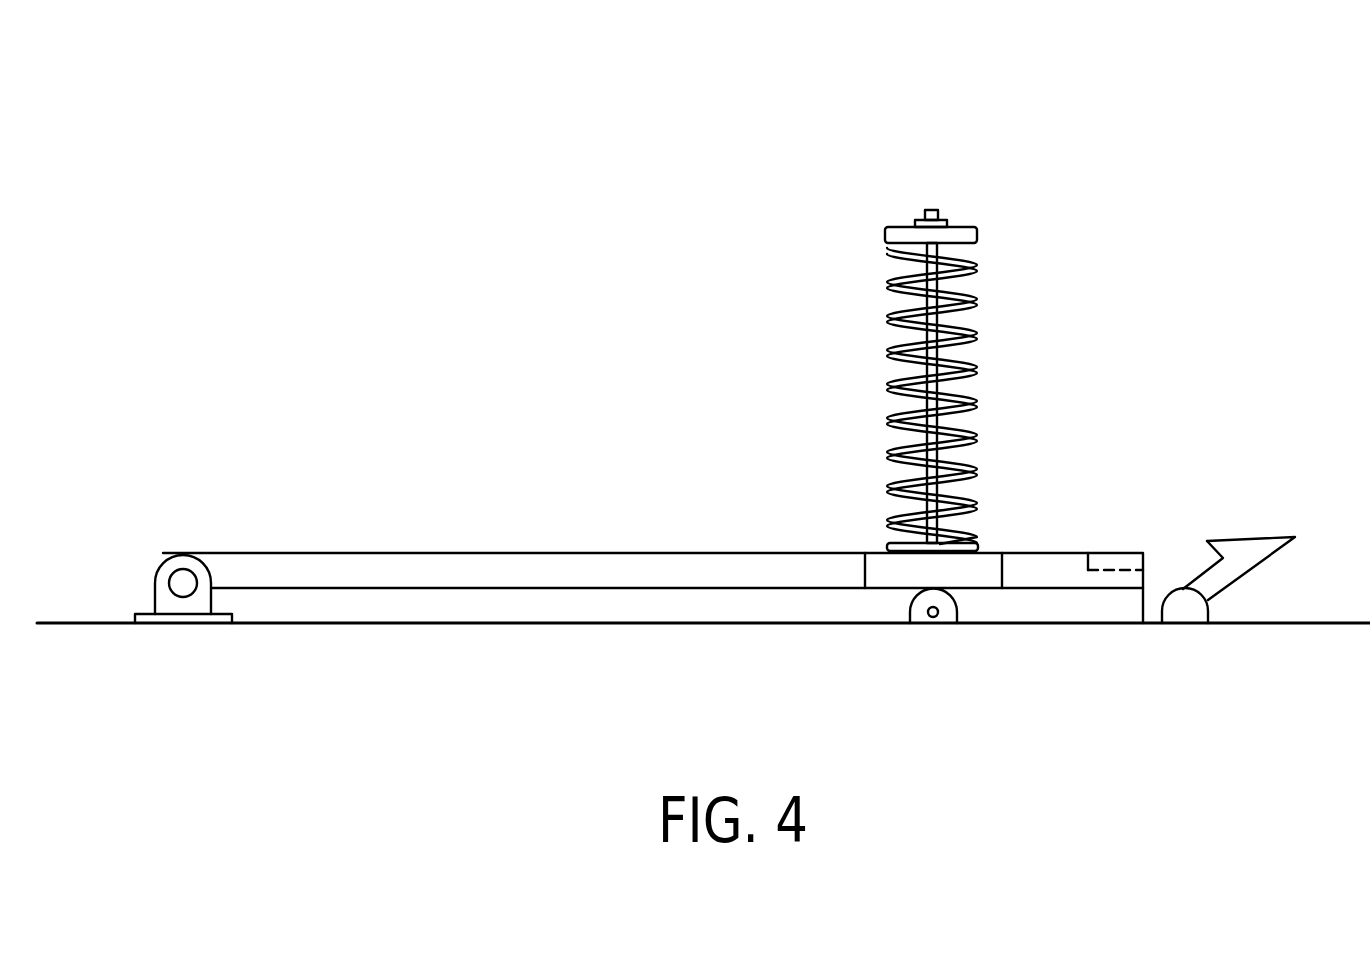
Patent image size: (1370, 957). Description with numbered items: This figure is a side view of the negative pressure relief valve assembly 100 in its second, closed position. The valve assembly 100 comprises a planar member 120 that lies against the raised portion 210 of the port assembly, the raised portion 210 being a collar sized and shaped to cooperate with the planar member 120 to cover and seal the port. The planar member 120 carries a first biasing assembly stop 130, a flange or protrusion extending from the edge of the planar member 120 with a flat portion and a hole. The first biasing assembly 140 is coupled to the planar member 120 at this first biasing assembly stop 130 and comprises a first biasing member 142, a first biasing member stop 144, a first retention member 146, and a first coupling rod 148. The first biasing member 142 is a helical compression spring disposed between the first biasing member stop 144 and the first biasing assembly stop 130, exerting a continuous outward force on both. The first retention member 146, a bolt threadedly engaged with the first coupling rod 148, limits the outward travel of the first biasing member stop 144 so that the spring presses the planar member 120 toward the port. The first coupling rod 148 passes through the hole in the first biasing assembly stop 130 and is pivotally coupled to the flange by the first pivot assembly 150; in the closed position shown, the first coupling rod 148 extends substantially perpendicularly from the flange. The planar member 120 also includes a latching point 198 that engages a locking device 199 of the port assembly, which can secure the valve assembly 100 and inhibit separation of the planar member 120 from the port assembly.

The negative pressure relief valve assembly 100 is at (1118, 440).
The planar member 120 is at (467, 563).
The first biasing assembly stop 130 is at (992, 552).
The first biasing assembly 140 is at (1073, 167).
The first biasing member 142 is at (967, 342).
The first biasing member stop 144 is at (962, 227).
The first retention member 146 is at (930, 208).
The first coupling rod 148 is at (962, 266).
The first pivot assembly 150 is at (952, 645).
The latching point 198 is at (1135, 553).
The locking device 199 is at (1252, 547).
The raised portion 210 is at (570, 605).